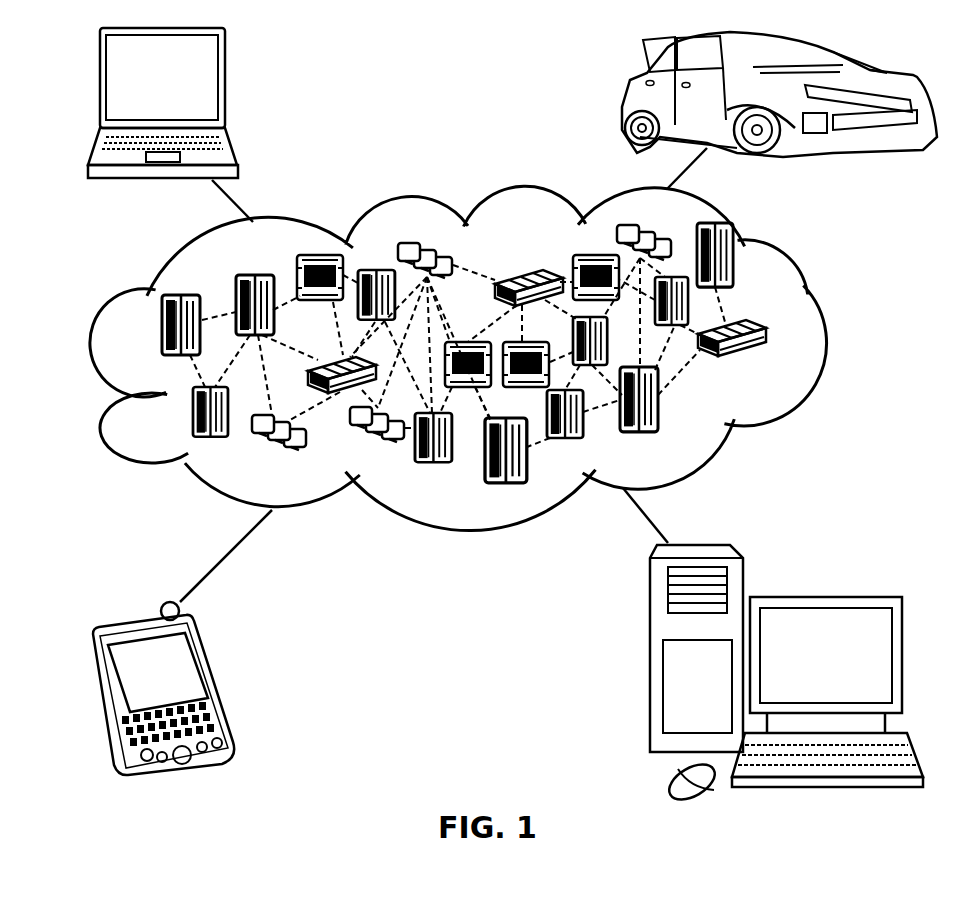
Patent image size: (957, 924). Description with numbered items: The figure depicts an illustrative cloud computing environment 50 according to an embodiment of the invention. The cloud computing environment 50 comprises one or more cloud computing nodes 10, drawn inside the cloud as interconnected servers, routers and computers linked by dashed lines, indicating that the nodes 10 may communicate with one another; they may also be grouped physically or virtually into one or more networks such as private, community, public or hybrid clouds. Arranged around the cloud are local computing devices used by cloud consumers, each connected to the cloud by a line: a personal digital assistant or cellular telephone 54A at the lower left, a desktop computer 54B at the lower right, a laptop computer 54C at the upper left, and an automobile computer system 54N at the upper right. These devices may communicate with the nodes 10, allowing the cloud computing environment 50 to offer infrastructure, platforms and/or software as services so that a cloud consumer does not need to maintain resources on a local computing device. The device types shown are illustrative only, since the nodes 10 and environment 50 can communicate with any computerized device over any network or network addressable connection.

The cloud computing nodes 10 is at (776, 364).
The cloud computing environment 50 is at (823, 334).
The personal digital assistant or cellular telephone 54A is at (213, 683).
The desktop computer 54B is at (827, 597).
The laptop computer 54C is at (227, 82).
The automobile computer system 54N is at (620, 100).